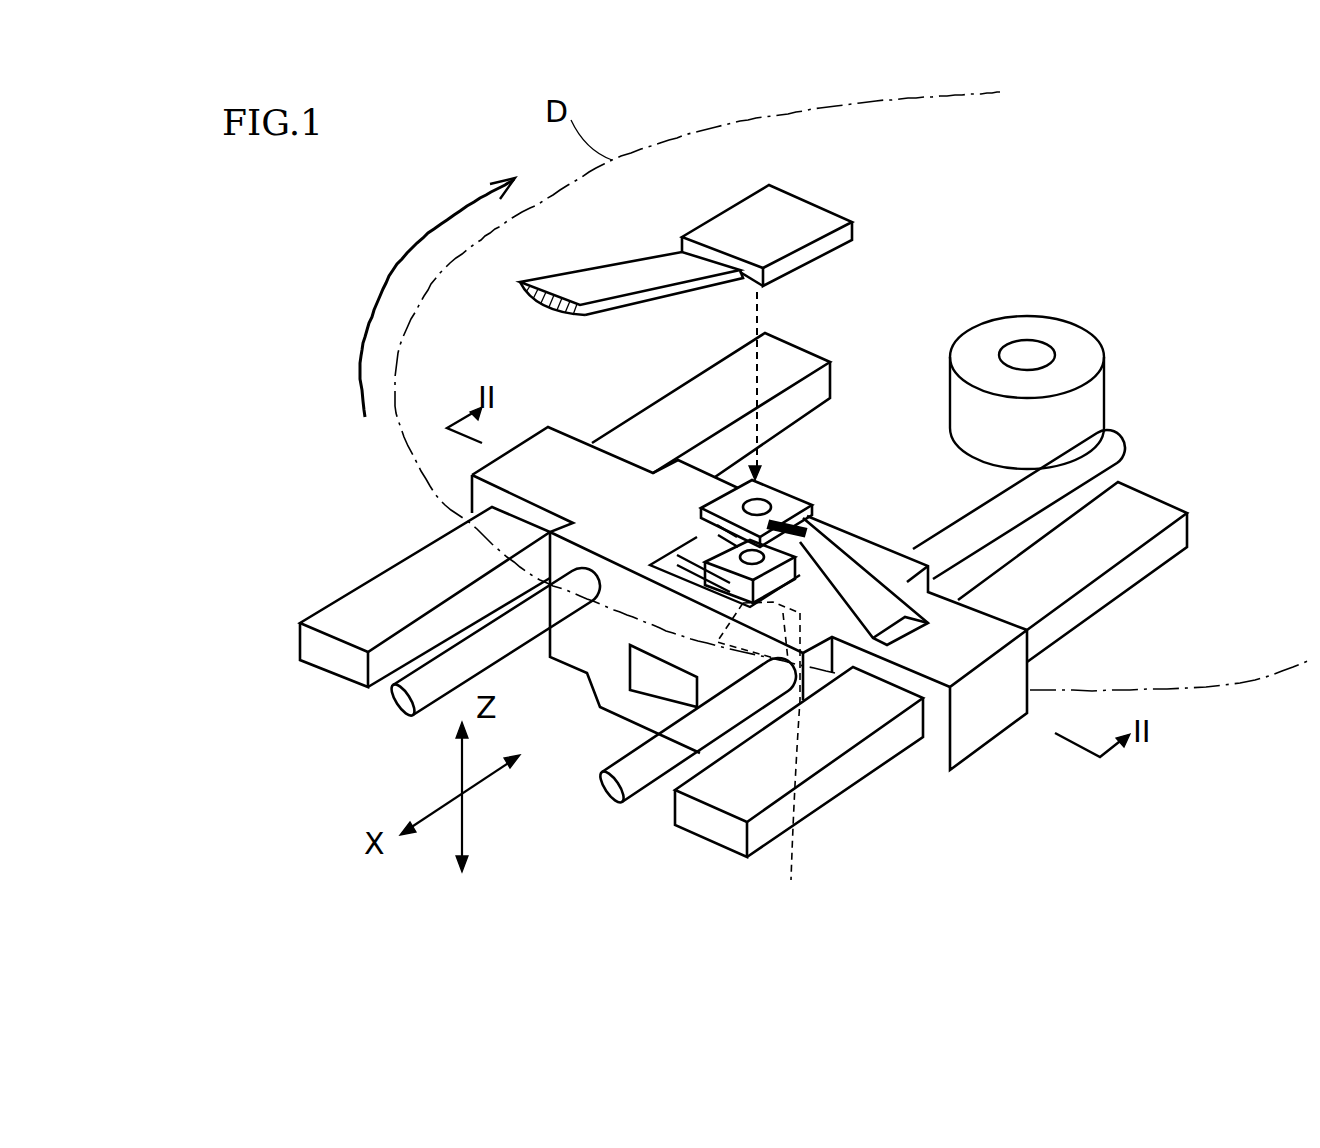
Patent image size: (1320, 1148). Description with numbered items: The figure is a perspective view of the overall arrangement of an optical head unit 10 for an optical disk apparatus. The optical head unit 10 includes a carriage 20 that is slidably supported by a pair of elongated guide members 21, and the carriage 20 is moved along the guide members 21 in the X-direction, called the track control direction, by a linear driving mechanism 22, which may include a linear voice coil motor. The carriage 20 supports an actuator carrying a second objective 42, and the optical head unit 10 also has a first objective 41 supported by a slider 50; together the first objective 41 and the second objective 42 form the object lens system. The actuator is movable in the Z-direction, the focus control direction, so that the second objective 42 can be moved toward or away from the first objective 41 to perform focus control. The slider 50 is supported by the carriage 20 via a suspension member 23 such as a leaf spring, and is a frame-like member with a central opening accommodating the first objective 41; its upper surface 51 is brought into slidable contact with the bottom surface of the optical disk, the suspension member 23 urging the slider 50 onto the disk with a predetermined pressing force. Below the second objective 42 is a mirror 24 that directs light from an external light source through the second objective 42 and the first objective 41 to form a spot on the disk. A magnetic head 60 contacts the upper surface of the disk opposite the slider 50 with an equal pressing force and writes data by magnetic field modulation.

The optical head unit 10 is at (880, 808).
The carriage 20 is at (988, 628).
The elongated guide members 21 is at (418, 692).
The linear driving mechanism 22 is at (597, 424).
The suspension member 23 is at (857, 585).
The mirror 24 is at (769, 762).
The first objective 41 is at (768, 501).
The second objective 42 is at (765, 556).
The slider 50 is at (805, 515).
The upper surface of the slider 51 is at (764, 464).
The magnetic head 60 is at (818, 220).